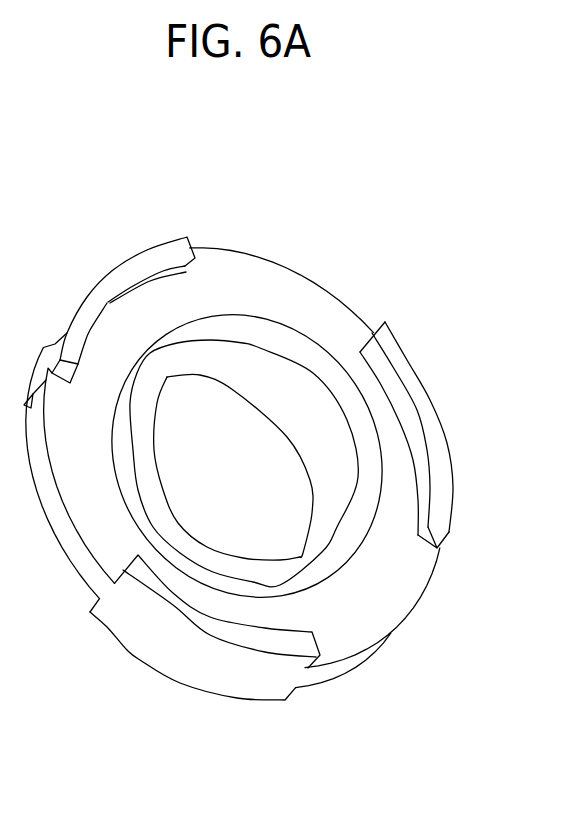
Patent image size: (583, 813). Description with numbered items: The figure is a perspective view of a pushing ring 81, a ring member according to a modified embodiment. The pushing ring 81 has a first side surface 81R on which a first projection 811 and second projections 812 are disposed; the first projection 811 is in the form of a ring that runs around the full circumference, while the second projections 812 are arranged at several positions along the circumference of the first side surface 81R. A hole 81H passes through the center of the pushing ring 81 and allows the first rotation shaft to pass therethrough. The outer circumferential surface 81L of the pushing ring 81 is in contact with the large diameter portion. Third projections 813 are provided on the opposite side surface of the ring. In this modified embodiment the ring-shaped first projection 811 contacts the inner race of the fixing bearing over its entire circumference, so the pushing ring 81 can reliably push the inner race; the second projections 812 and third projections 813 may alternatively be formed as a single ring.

The pushing ring 81 is at (389, 235).
The first side surface 81R is at (236, 283).
The outer circumferential surface 81L is at (137, 635).
The hole 81H is at (252, 474).
The first projection 811 is at (270, 332).
The second projections 812 is at (125, 273).
The third projections 813 is at (168, 678).